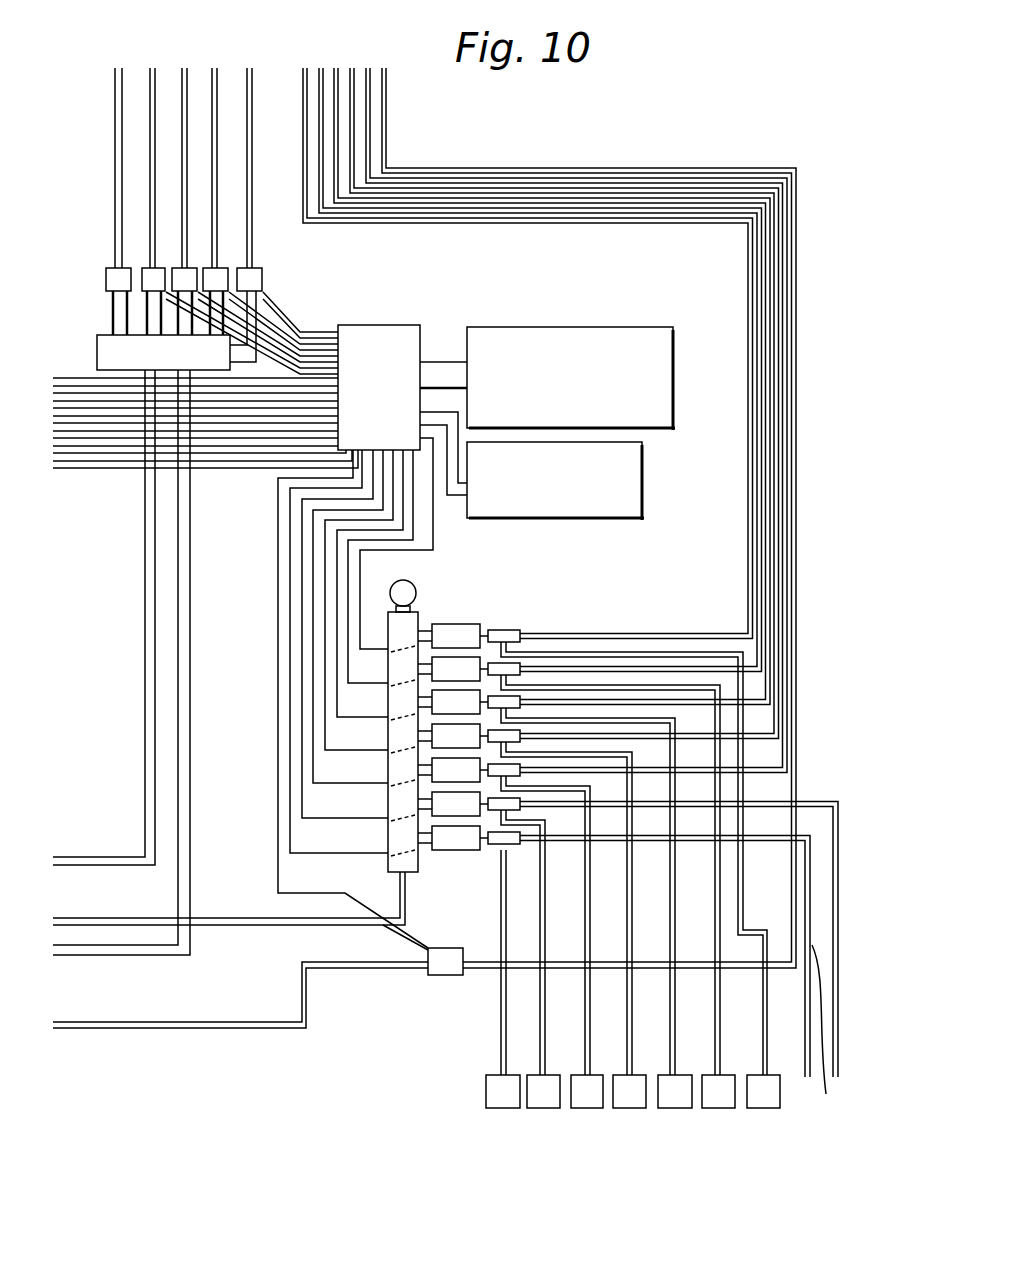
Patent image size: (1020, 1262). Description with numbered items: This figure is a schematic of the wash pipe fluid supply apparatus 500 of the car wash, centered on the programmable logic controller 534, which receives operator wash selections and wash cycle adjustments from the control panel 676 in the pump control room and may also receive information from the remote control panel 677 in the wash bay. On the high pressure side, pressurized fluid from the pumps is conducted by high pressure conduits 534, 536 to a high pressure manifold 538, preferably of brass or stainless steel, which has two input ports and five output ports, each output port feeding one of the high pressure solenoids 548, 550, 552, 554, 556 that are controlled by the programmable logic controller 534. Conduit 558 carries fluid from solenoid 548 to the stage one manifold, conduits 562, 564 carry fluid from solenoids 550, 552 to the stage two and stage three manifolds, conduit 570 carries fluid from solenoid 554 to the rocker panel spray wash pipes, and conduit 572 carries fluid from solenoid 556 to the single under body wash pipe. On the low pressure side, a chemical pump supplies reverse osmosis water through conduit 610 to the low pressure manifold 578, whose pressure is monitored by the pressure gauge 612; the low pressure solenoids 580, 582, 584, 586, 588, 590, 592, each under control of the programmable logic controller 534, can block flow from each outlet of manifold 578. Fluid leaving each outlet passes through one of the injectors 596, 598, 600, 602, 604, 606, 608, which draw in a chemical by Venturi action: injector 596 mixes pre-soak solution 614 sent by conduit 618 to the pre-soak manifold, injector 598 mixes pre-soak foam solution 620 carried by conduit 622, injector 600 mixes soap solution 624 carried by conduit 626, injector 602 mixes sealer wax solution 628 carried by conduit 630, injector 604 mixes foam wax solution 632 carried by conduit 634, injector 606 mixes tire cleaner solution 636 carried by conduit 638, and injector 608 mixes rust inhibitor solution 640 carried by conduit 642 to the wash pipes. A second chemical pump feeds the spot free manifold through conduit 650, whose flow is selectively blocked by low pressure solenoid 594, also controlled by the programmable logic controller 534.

The control system 500 is at (642, 96).
The programmable logic controller 534 is at (395, 324).
The high pressure conduit 536 is at (192, 878).
The high pressure manifold 538 is at (97, 345).
The high pressure solenoid 548 is at (106, 282).
The high pressure solenoid 550 is at (160, 268).
The high pressure solenoid 552 is at (190, 268).
The high pressure solenoid 554 is at (222, 268).
The high pressure solenoid 556 is at (265, 282).
The conduit 558 is at (117, 120).
The conduit 562 is at (150, 90).
The conduit 564 is at (181, 84).
The conduit 570 is at (213, 84).
The conduit 572 is at (250, 263).
The low pressure manifold 578 is at (420, 616).
The low pressure solenoid 580 is at (453, 636).
The low pressure solenoid 582 is at (453, 669).
The low pressure solenoid 584 is at (453, 702).
The low pressure solenoid 586 is at (453, 736).
The low pressure solenoid 588 is at (453, 770).
The low pressure solenoid 590 is at (453, 804).
The low pressure solenoid 592 is at (453, 838).
The low pressure solenoid 594 is at (435, 977).
The injector 596 is at (522, 630).
The injector 598 is at (522, 666).
The injector 600 is at (523, 702).
The injector 602 is at (523, 736).
The injector 604 is at (523, 770).
The injector 606 is at (528, 821).
The injector 608 is at (492, 848).
The conduit 610 is at (250, 927).
The pressure gauge 612 is at (416, 592).
The pre-soak solution 614 is at (763, 1110).
The conduit 618 is at (748, 490).
The pre-soak foam solution 620 is at (718, 1110).
The conduit 622 is at (757, 512).
The soap solution 624 is at (675, 1110).
The conduit 626 is at (766, 535).
The sealer wax solution 628 is at (630, 1110).
The conduit 630 is at (774, 557).
The foam wax solution 632 is at (588, 1110).
The conduit 634 is at (782, 577).
The tire cleaner solution 636 is at (545, 1110).
The conduit 638 is at (838, 945).
The rust inhibitor solution 640 is at (497, 1110).
The conduit 642 is at (826, 1095).
The conduit 650 is at (792, 597).
The control panel 676 is at (603, 326).
The remote control panel 677 is at (644, 462).